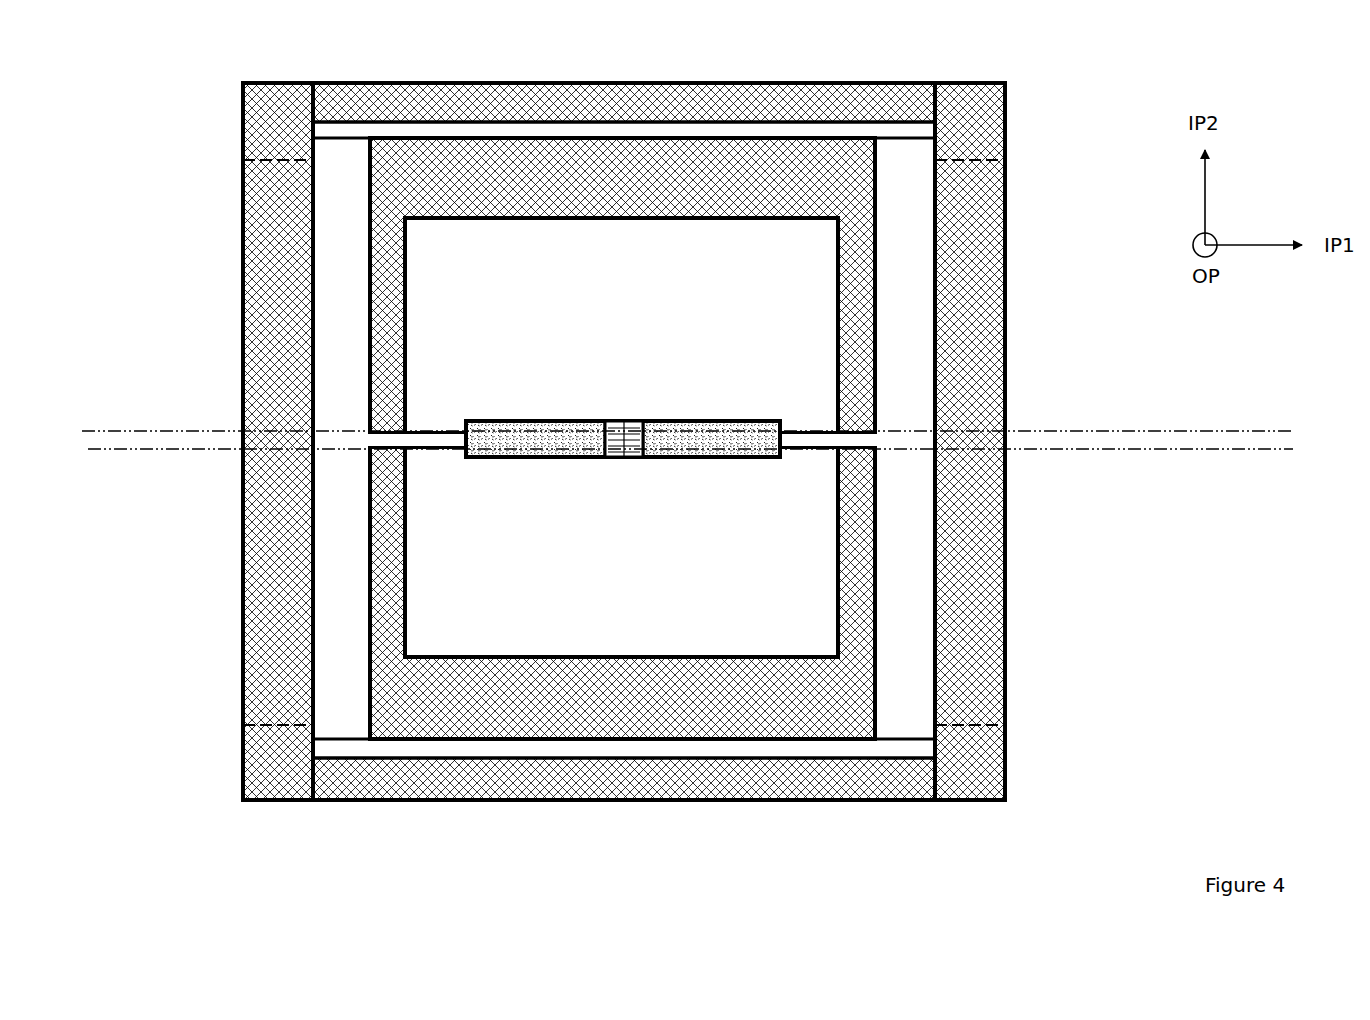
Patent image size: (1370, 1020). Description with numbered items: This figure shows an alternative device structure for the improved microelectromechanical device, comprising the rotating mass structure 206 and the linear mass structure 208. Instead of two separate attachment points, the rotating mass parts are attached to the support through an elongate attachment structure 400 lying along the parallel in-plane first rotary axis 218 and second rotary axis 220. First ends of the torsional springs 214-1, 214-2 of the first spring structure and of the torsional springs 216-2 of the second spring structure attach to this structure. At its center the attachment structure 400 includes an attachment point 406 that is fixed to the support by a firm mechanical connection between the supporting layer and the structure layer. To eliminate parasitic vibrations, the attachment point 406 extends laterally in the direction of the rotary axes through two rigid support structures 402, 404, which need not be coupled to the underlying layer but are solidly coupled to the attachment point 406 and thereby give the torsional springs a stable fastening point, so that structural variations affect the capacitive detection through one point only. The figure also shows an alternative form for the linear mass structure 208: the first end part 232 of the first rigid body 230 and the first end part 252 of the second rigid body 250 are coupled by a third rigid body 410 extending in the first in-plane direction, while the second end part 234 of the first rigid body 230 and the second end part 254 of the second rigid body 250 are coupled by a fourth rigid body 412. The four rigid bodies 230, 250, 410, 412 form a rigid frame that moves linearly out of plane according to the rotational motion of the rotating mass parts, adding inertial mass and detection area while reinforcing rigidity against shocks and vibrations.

The rotating mass structure 206 is at (408, 318).
The linear mass structure 208 is at (1000, 628).
The torsional spring of the first spring structure 214-1 is at (812, 420).
The torsional spring of the first spring structure 214-2 is at (420, 430).
The torsional spring of the second spring structure 216-2 is at (420, 457).
The first rotary axis 218 is at (1143, 425).
The second rotary axis 220 is at (1295, 447).
The first rigid body 230 is at (988, 330).
The first end part of the first rigid body 232 is at (975, 105).
The second end part of the first rigid body 234 is at (963, 785).
The second rigid body 250 is at (280, 540).
The first end part of the second rigid body 252 is at (268, 92).
The second end part of the second rigid body 254 is at (272, 792).
The elongate attachment structure 400 is at (548, 420).
The rigid support structure 402 is at (528, 457).
The rigid support structure 404 is at (668, 457).
The attachment point 406 is at (612, 457).
The third rigid body 410 is at (660, 95).
The fourth rigid body 412 is at (578, 782).